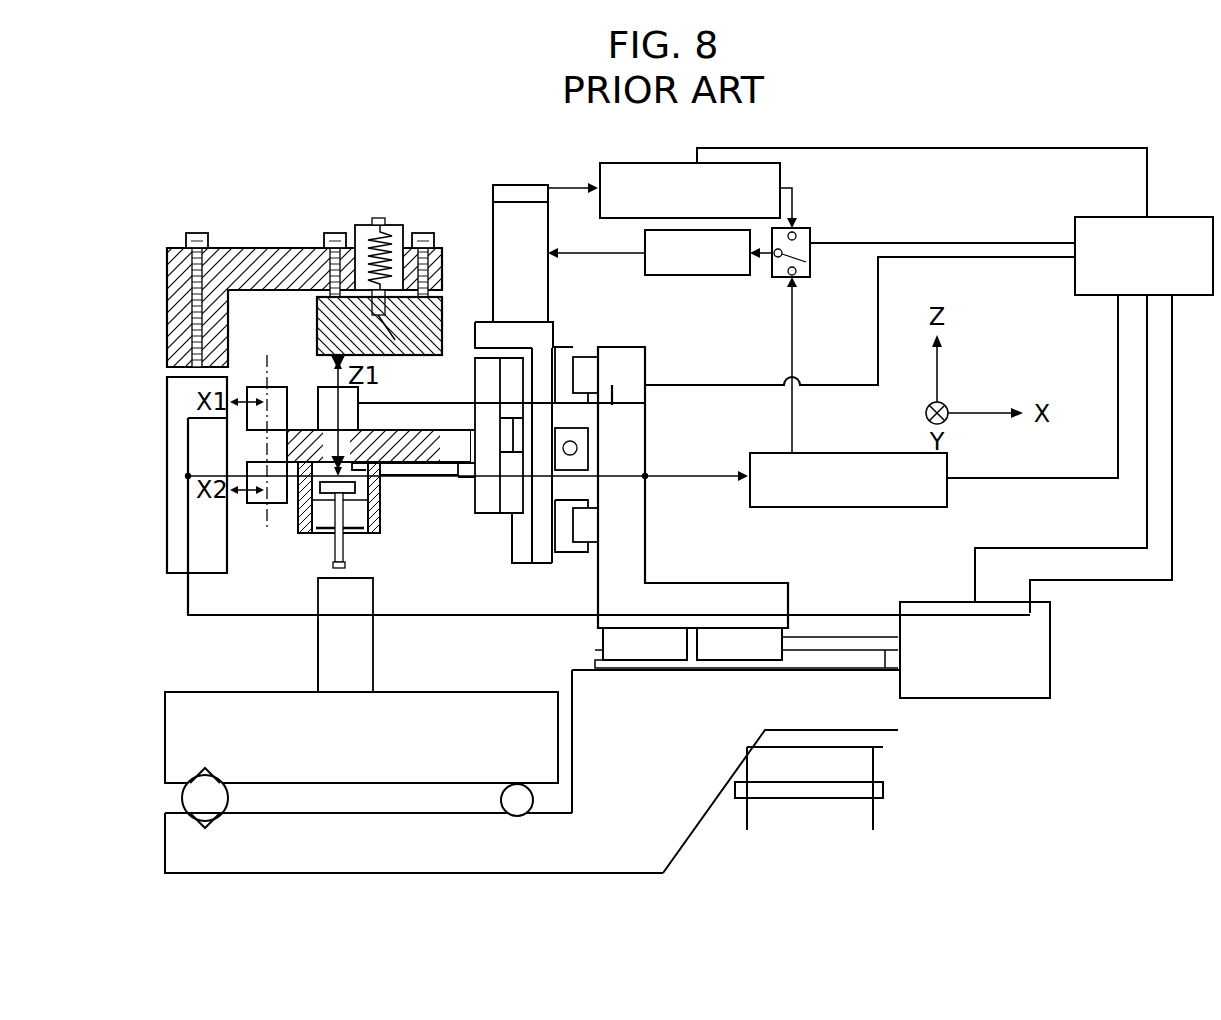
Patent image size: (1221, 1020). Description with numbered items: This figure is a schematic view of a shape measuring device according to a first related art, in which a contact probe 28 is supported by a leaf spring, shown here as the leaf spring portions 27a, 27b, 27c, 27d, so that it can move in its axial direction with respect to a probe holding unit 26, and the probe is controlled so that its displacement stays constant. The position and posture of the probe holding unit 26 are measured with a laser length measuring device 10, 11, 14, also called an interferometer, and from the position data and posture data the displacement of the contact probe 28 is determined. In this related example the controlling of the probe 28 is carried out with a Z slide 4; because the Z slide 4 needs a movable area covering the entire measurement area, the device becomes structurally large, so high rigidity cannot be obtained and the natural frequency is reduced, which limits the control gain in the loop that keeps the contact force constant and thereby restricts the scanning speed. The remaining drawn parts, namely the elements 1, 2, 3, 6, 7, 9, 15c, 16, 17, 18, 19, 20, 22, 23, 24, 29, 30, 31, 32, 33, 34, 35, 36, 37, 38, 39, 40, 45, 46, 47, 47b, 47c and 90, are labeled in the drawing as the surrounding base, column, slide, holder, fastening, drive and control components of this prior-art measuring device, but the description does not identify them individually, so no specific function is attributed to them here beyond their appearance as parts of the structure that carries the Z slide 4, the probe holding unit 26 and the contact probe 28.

The base table 1 is at (170, 725).
The head column 2 is at (540, 325).
The slider body 3 is at (645, 455).
The Z slide 4 is at (487, 505).
The support post 6 is at (322, 663).
The frame 7 is at (165, 445).
The stopper block 9 is at (440, 320).
The laser length measuring device 10 is at (258, 385).
The laser length measuring device 11 is at (258, 503).
The laser length measuring device 14 is at (320, 385).
The leg 15c is at (880, 767).
The base frame 16 is at (700, 840).
The slab 17 is at (870, 675).
The drive block 18 is at (1022, 690).
The drive unit 19 is at (893, 648).
The sensor 20 is at (590, 365).
The pivot 22 is at (575, 445).
The bracket 23 is at (522, 565).
The actuator column 24 is at (540, 228).
The probe holding unit 26 is at (368, 515).
The holder inner wall 27a is at (312, 530).
The holder partition 27b is at (328, 535).
The holder outer wall 27c is at (382, 505).
The holder bottom 27d is at (372, 530).
The contact probe 28 is at (343, 560).
The probe head 29 is at (356, 487).
The support block 30 is at (345, 580).
The plate 31 is at (372, 470).
The mounting block 32 is at (165, 343).
The bolt 33 is at (305, 247).
The bolt head 34 is at (195, 238).
The contact tip 35 is at (400, 338).
The spring housing 36 is at (400, 228).
The screw 37 is at (362, 232).
The spring 38 is at (380, 224).
The contact pressure controlling unit 39 is at (815, 508).
The switch 40 is at (805, 228).
The actuator top 45 is at (515, 183).
The amplifier / ball 46 is at (190, 772).
The position controlling unit 47 is at (675, 162).
The guide rail 47b is at (182, 798).
The ball 47c is at (510, 818).
The total controlling unit 90 is at (1100, 215).